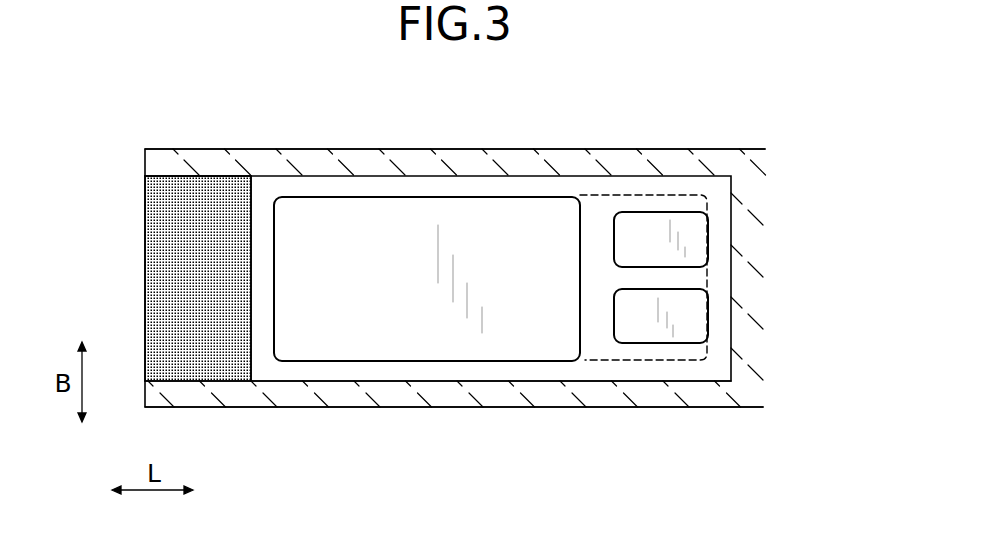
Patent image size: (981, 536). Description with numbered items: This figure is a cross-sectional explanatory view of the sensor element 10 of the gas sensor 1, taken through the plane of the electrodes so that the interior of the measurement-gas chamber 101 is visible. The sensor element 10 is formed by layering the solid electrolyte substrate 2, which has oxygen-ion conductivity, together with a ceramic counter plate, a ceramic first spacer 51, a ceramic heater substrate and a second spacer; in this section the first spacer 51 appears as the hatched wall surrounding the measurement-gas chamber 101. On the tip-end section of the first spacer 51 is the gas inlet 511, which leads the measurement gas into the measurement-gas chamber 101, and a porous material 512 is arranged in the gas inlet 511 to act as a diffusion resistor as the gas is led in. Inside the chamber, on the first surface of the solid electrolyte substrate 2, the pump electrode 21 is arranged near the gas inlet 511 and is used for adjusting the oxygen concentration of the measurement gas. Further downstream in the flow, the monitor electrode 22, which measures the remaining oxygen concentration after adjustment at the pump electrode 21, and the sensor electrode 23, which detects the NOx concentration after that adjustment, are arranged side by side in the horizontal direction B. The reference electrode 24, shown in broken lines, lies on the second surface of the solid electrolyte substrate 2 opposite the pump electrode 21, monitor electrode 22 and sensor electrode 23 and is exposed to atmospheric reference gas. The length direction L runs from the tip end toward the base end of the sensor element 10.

The gas sensor 1 is at (733, 428).
The solid electrolyte substrate 2 is at (718, 192).
The sensor element 10 is at (473, 148).
The pump electrode 21 is at (390, 238).
The monitor electrode 22 is at (642, 323).
The sensor electrode 23 is at (650, 232).
The reference electrode 24 is at (593, 218).
The first spacer 51 is at (300, 397).
The measurement-gas chamber 101 is at (432, 380).
The gas inlet 511 is at (203, 177).
The porous material 512 is at (200, 270).